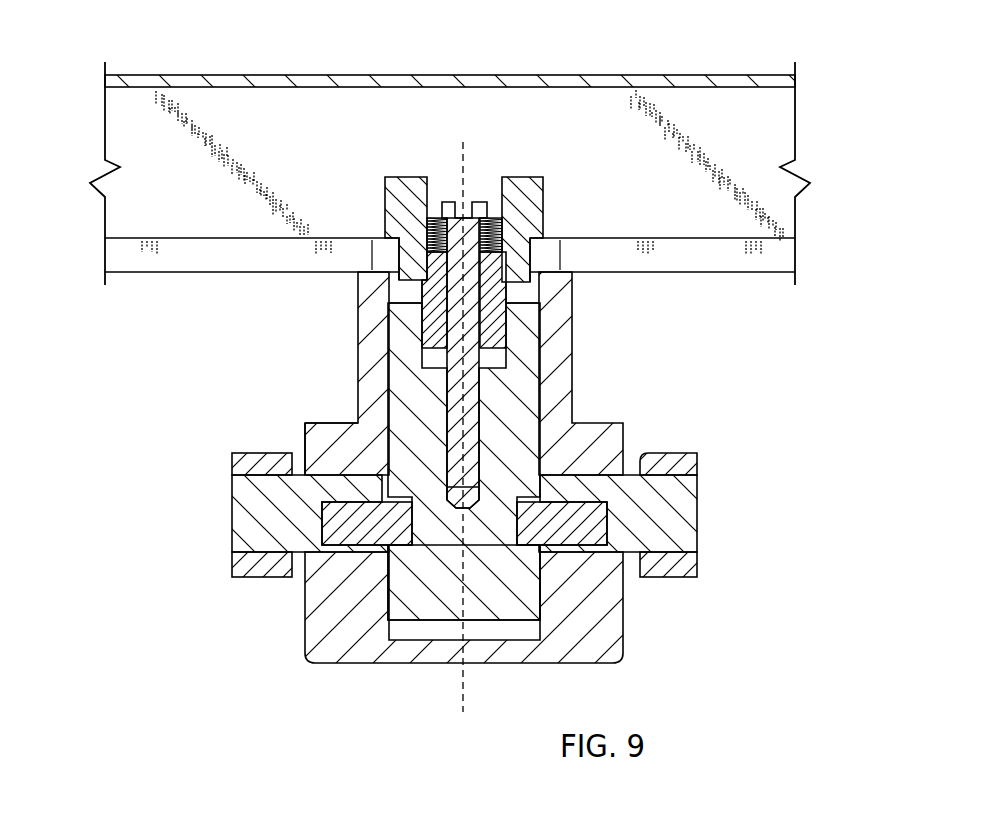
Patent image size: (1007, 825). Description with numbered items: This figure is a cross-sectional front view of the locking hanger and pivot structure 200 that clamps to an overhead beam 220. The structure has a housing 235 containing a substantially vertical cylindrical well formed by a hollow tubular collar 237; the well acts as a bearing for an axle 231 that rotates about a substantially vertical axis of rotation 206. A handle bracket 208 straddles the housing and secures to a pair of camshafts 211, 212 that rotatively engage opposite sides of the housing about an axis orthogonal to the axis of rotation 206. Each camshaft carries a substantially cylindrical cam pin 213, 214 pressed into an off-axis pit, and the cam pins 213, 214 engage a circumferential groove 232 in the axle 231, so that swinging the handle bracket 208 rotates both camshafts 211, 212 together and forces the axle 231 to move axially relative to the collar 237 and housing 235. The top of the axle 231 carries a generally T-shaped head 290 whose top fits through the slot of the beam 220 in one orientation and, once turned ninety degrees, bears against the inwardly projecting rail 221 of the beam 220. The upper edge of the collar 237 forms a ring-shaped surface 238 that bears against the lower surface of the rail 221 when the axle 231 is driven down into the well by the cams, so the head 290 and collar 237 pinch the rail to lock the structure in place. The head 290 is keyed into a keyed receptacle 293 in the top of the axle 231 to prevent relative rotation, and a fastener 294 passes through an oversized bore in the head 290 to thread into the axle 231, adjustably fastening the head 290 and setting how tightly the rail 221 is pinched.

The mounting assembly 200 is at (132, 416).
The axis of rotation 206 is at (462, 153).
The handle bracket 208 is at (700, 463).
The camshaft 211 is at (697, 516).
The camshaft 212 is at (232, 517).
The cam pin 213 is at (587, 539).
The cam pin 214 is at (360, 541).
The beam 220 is at (658, 73).
The rail 221 is at (712, 262).
The axle 231 is at (484, 598).
The circumferential groove 232 is at (402, 497).
The housing 235 is at (379, 664).
The collar 237 is at (572, 376).
The ring-shaped surface 238 is at (372, 266).
The head 290 is at (545, 187).
The keyed receptacle 293 is at (427, 360).
The fastener 294 is at (482, 214).